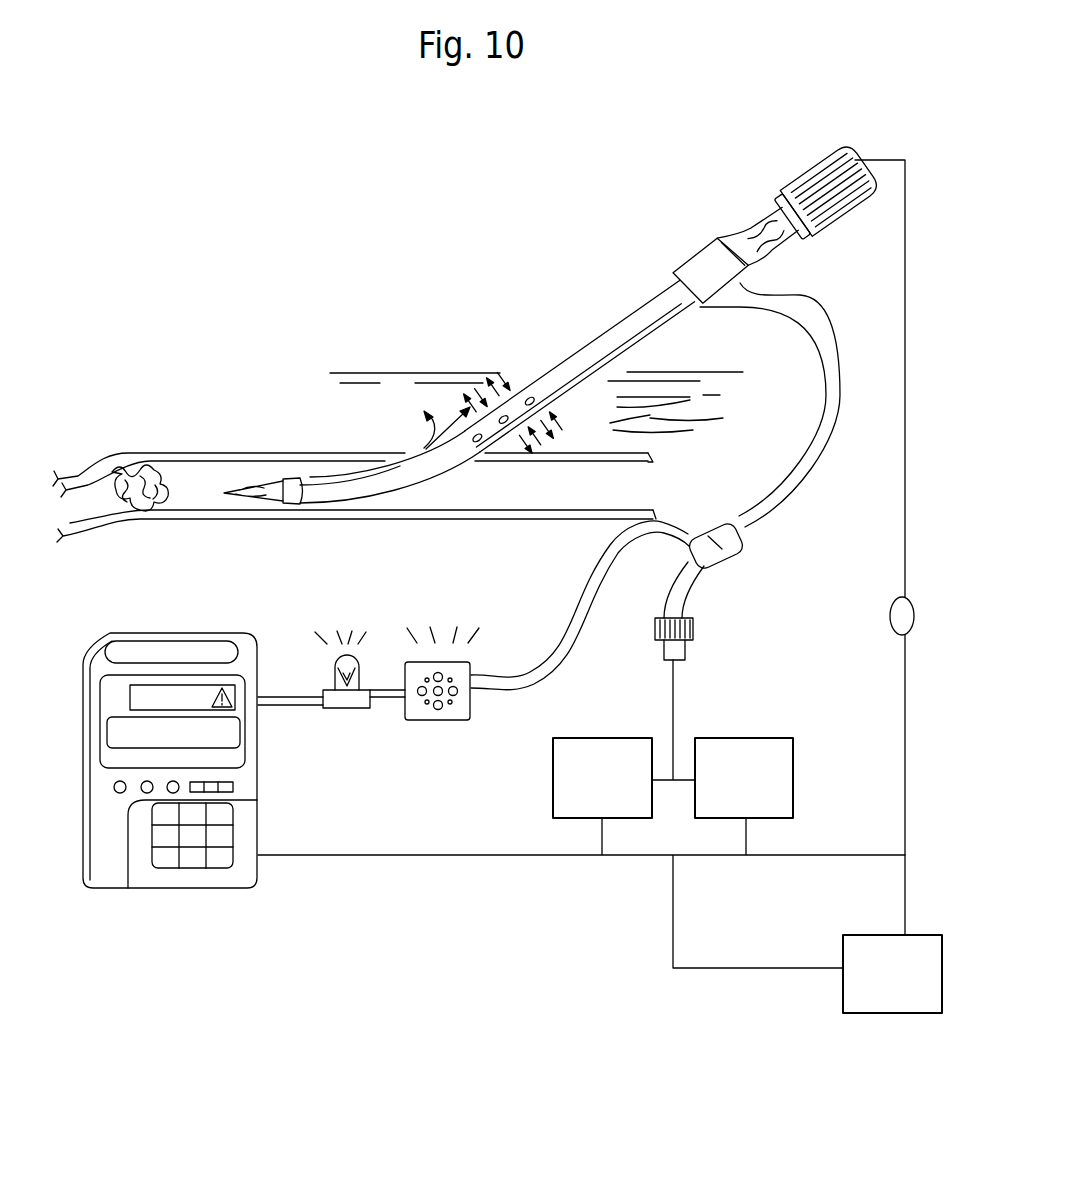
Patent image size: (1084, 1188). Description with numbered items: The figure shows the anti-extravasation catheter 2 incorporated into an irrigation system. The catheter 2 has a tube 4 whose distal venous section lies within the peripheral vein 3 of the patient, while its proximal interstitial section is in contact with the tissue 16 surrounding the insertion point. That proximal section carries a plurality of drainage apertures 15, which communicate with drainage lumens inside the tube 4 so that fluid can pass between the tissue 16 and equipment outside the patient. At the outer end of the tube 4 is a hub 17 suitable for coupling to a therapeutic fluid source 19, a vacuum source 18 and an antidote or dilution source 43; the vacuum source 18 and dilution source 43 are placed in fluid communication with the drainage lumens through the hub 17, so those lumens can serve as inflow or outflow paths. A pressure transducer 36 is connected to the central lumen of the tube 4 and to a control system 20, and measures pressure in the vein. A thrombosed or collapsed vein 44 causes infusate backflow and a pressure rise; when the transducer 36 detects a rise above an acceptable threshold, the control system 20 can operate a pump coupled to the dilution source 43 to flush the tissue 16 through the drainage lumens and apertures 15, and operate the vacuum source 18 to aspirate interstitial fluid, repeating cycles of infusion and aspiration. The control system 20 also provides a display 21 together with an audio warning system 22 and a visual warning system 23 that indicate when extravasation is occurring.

The catheter 2 is at (577, 260).
The peripheral vein 3 is at (207, 452).
The tube 4 is at (597, 347).
The drainage apertures 15 is at (530, 397).
The tissue 16 is at (386, 425).
The hub 17 is at (710, 251).
The vacuum source 18 is at (555, 798).
The therapeutic fluid source 19 is at (843, 975).
The control system 20 is at (173, 868).
The display 21 is at (104, 702).
The audio warning system 22 is at (344, 708).
The visual warning system 23 is at (447, 722).
The pressure transducer 36 is at (891, 622).
The dilution source 43 is at (795, 774).
The thrombosed or collapsed vein 44 is at (94, 528).